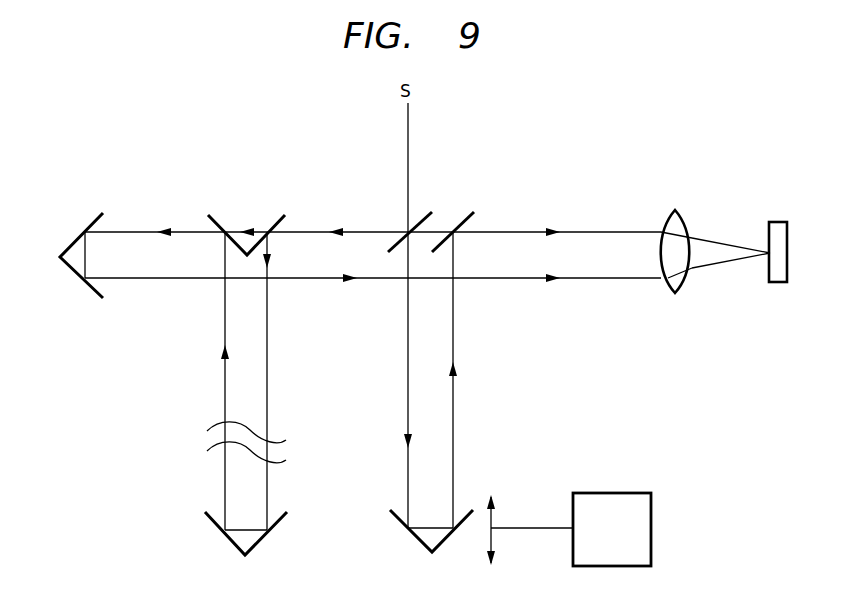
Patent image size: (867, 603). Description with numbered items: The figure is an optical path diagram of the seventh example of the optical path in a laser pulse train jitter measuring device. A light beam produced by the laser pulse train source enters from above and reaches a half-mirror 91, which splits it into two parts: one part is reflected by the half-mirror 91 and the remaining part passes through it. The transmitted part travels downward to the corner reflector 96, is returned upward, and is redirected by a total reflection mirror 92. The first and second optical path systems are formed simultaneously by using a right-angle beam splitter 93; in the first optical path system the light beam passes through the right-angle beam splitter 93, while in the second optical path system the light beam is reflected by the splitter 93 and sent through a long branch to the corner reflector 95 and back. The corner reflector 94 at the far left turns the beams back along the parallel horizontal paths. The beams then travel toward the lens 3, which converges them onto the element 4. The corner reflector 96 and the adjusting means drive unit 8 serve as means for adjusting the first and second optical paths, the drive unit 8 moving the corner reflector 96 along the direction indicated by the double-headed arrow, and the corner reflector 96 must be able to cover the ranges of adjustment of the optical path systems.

The lens 3 is at (683, 211).
The detector 4 is at (778, 222).
The drive unit 8 is at (635, 493).
The half-mirror 91 is at (422, 210).
The total reflection mirror 92 is at (472, 210).
The right-angle beam splitter 93 is at (270, 232).
The corner reflector 94 is at (87, 228).
The corner reflector 95 is at (213, 527).
The corner reflector 96 is at (403, 525).